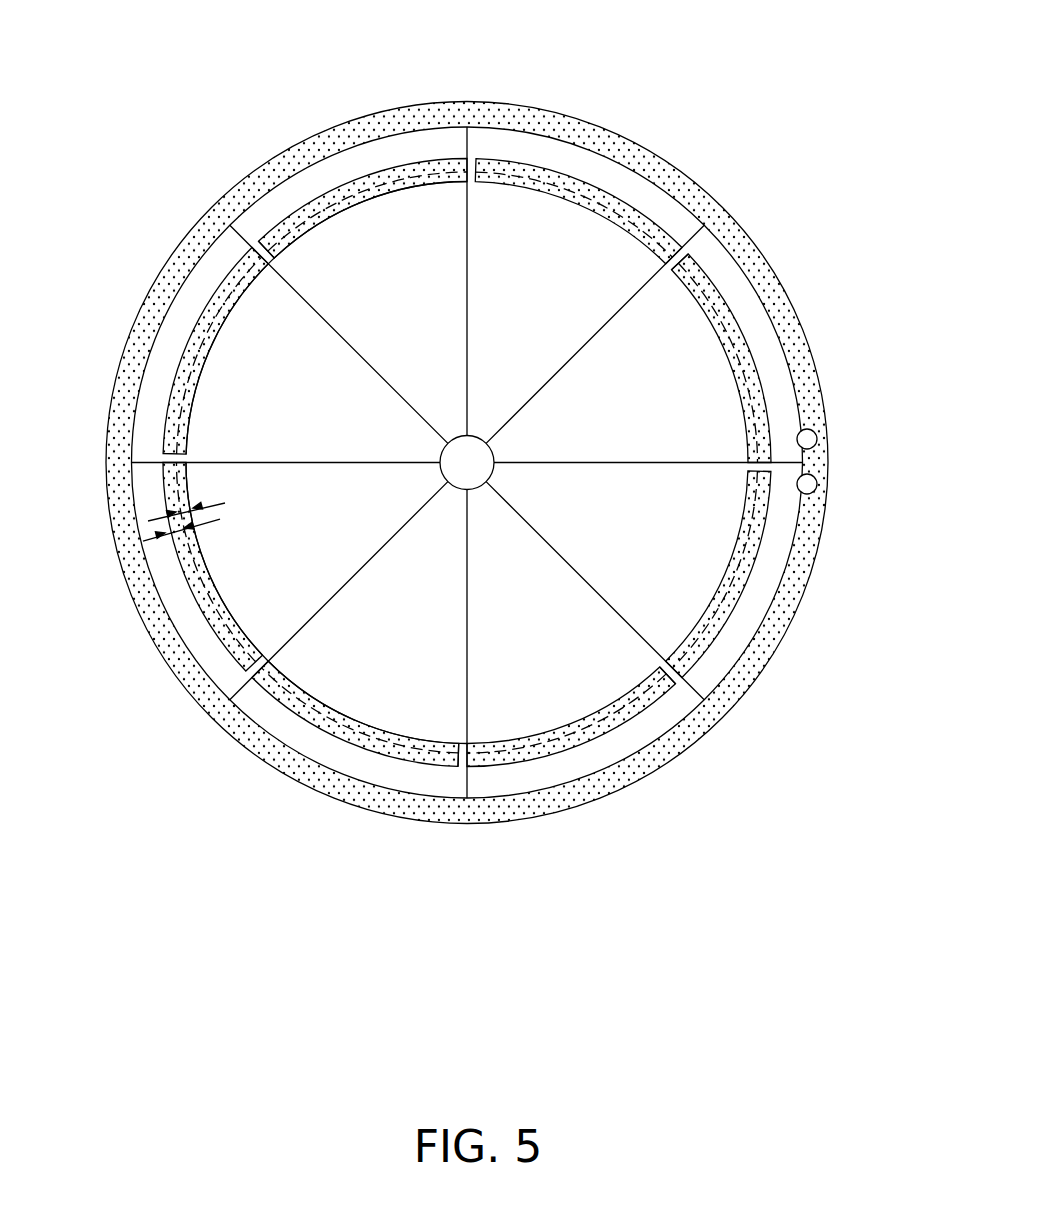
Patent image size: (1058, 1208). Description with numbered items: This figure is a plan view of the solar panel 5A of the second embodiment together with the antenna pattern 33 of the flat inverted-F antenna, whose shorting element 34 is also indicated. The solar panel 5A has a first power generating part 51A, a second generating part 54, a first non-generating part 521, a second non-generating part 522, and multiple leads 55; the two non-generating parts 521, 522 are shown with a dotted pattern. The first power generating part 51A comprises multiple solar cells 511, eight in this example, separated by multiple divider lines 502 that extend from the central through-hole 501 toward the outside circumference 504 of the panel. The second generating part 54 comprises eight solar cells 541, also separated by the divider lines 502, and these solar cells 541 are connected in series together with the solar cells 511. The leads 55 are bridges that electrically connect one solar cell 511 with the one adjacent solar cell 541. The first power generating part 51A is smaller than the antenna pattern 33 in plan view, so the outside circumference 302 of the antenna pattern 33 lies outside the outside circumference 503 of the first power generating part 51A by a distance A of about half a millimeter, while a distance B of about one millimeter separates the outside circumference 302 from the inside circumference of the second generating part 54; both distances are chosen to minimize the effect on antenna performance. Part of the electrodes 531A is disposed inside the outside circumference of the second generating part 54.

The solar panel 5A is at (497, 460).
The antenna pattern 33 is at (532, 173).
The shorting element 34 is at (750, 522).
The outside circumference of the antenna pattern 302 is at (488, 163).
The first power generating part 51A is at (690, 273).
The second generating part 54 is at (486, 423).
The leads 55 is at (263, 248).
The through-hole 501 is at (490, 460).
The divider lines 502 is at (222, 461).
The outside circumference of the first power generating part 503 is at (481, 465).
The outside circumference 504 is at (426, 101).
The solar cells 511 is at (358, 247).
The first non-generating part 521 is at (662, 217).
The second non-generating part 522 is at (632, 158).
The electrodes 531A is at (812, 441).
The solar cells 541 is at (768, 355).
The distance A is at (170, 500).
The distance B is at (163, 532).